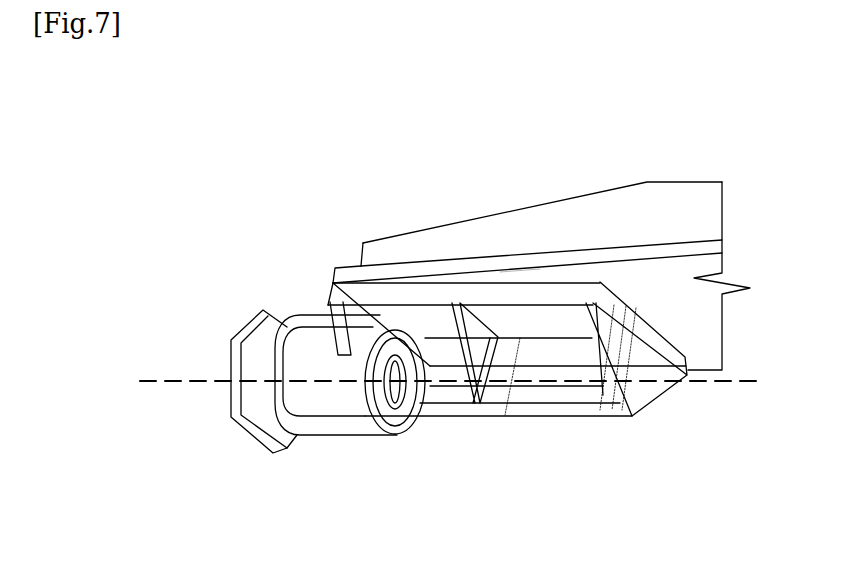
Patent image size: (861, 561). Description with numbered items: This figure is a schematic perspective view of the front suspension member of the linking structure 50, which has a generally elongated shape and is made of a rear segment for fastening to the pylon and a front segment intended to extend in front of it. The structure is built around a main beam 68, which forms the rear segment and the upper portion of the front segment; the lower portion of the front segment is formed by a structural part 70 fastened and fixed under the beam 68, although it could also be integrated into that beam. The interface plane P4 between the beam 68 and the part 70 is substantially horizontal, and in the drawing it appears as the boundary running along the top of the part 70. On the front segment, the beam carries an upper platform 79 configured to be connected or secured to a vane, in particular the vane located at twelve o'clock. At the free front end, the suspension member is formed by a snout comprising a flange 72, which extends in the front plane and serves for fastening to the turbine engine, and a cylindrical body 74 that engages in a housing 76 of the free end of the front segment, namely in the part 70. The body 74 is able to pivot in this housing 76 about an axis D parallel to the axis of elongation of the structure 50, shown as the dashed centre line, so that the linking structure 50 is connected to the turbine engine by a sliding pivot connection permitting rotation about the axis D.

The linking structure 50 is at (467, 315).
The main beam 68 is at (708, 210).
The upper platform 79 is at (566, 217).
The interface plane P4 is at (525, 270).
The structural part 70 is at (578, 411).
The flange 72 is at (235, 420).
The cylindrical body 74 is at (325, 408).
The housing 76 is at (360, 437).
The pivot axis D is at (173, 380).